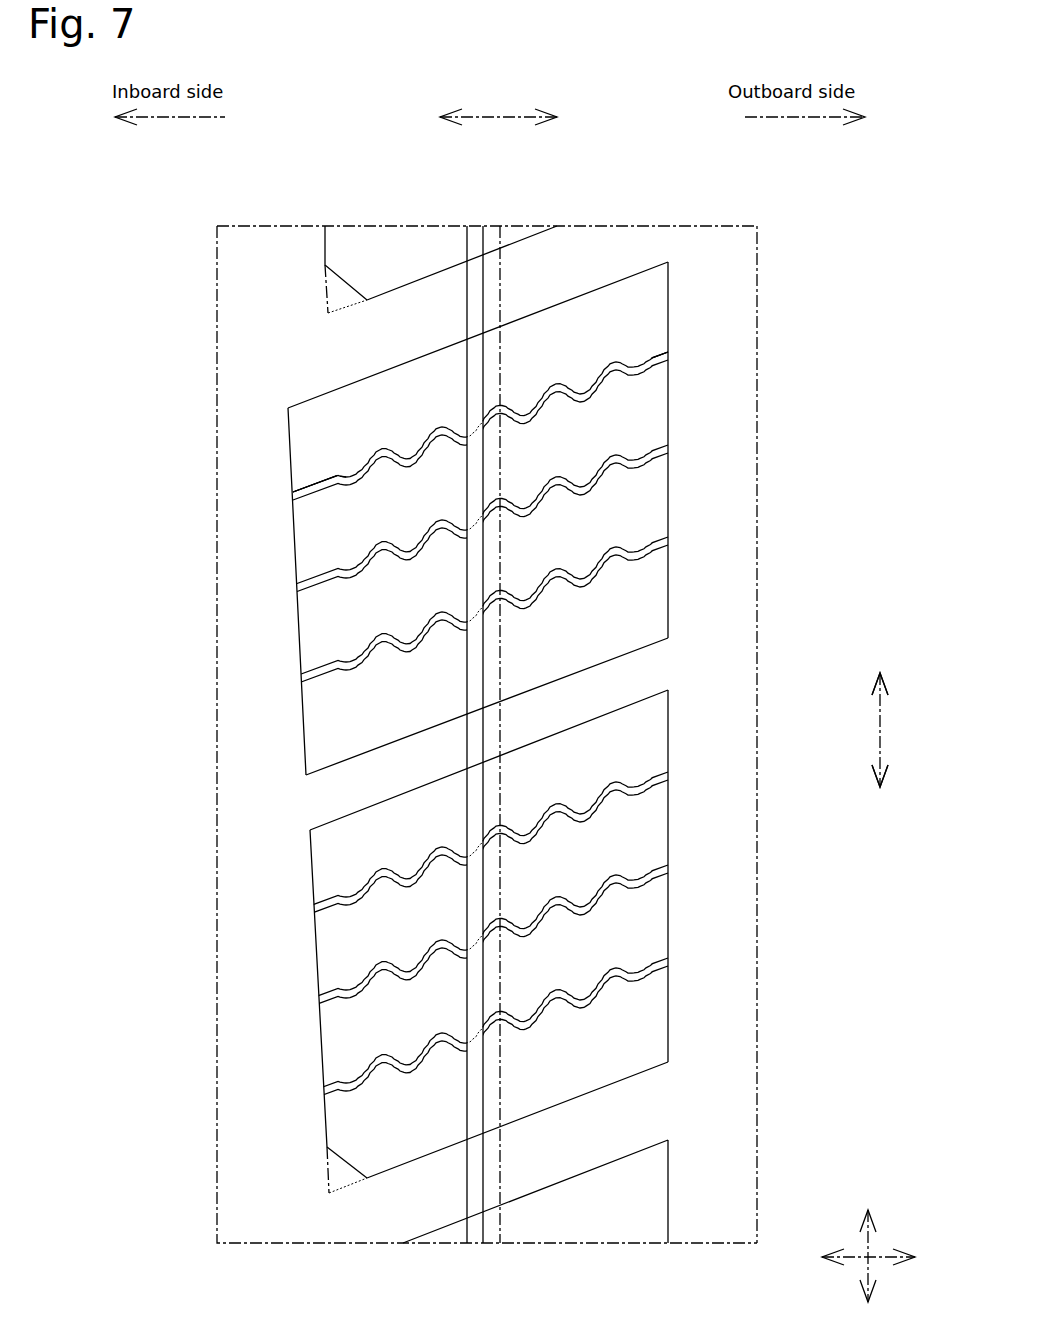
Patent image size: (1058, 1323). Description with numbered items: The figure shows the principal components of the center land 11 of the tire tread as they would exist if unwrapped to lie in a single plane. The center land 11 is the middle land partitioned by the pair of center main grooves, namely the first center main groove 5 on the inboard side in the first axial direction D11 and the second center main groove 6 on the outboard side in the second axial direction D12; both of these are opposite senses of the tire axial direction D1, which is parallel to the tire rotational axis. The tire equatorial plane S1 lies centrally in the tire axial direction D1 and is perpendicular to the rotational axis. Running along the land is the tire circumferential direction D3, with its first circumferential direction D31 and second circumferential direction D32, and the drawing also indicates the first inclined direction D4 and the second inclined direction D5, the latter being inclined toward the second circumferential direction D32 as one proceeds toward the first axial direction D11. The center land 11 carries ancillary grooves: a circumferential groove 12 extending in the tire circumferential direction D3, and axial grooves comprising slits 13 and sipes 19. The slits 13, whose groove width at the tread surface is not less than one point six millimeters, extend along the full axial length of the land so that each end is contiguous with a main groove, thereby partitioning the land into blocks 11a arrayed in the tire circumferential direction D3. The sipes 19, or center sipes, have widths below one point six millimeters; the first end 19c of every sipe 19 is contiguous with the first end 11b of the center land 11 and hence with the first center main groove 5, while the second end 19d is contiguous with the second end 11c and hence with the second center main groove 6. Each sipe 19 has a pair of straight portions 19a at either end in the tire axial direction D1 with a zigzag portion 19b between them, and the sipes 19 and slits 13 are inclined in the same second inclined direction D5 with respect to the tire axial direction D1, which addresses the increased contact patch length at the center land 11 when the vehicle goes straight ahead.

The first center main groove 5 is at (268, 245).
The second center main groove 6 is at (712, 245).
The center land 11 is at (488, 226).
The block 11a is at (300, 427).
The first end of center land 11b is at (327, 257).
The second end of center land 11c is at (668, 290).
The circumferential groove 12 is at (465, 395).
The slit 13 is at (356, 340).
The sipe 19 is at (613, 398).
The straight portion 19a is at (641, 355).
The zigzag portion 19b is at (548, 383).
The first end of sipe 19c is at (320, 497).
The second end of sipe 19d is at (668, 353).
The tire equatorial plane S1 is at (500, 1167).
The tire axial direction D1 is at (498, 109).
The first axial direction D11 is at (145, 119).
The second axial direction D12 is at (826, 119).
The tire circumferential direction D3 is at (891, 730).
The first circumferential direction D31 is at (879, 673).
The second circumferential direction D32 is at (879, 790).
The first inclined direction D4 is at (866, 1256).
The second inclined direction D5 is at (868, 1258).